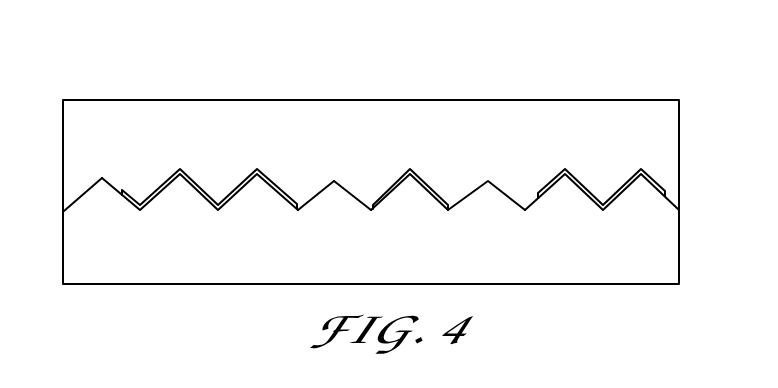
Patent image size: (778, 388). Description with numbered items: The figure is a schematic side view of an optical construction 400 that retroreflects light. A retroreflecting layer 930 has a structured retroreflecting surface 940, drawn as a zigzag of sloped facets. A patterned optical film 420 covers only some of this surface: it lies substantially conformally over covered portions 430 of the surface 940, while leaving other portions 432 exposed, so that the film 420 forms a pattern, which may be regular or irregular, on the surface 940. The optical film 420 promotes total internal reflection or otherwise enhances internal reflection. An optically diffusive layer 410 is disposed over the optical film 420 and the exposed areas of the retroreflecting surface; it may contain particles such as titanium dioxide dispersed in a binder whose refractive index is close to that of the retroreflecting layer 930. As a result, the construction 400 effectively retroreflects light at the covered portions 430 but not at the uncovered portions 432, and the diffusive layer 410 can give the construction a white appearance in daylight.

The optical construction 400 is at (116, 52).
The optically diffusive layer 410 is at (665, 130).
The retroreflecting layer 930 is at (667, 245).
The patterned optical film 420 is at (194, 184).
The covered portions 430 is at (199, 194).
The uncovered portions 432 is at (83, 195).
The structured retroreflecting surface 940 is at (358, 197).